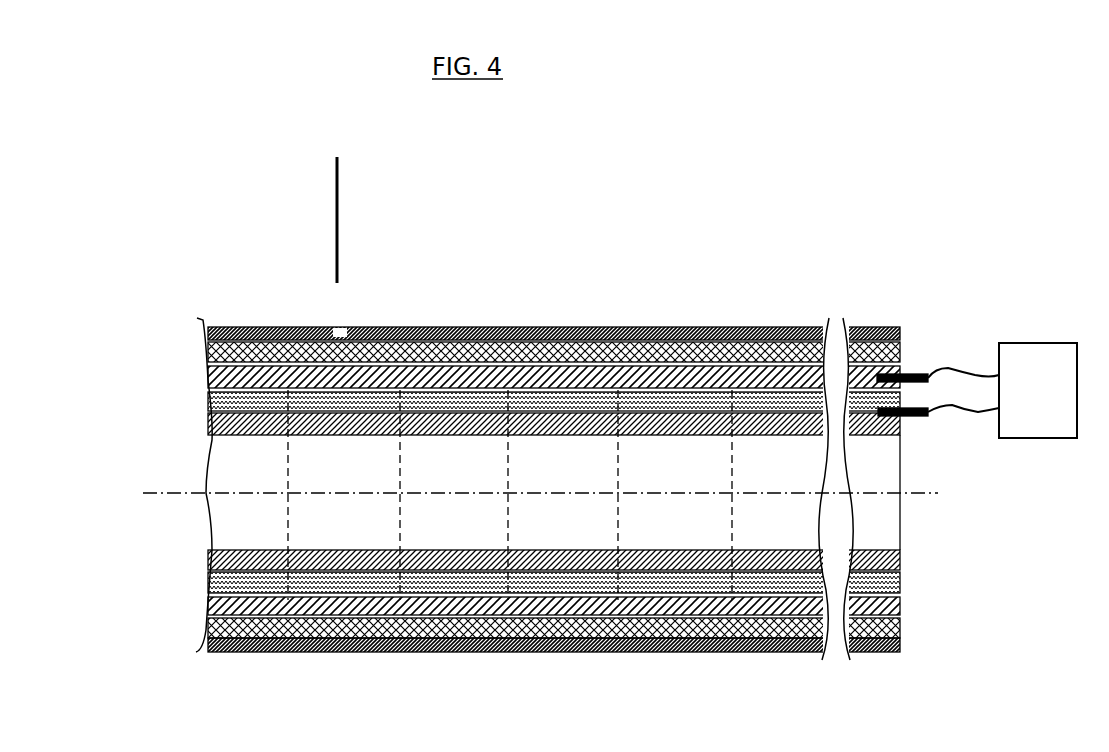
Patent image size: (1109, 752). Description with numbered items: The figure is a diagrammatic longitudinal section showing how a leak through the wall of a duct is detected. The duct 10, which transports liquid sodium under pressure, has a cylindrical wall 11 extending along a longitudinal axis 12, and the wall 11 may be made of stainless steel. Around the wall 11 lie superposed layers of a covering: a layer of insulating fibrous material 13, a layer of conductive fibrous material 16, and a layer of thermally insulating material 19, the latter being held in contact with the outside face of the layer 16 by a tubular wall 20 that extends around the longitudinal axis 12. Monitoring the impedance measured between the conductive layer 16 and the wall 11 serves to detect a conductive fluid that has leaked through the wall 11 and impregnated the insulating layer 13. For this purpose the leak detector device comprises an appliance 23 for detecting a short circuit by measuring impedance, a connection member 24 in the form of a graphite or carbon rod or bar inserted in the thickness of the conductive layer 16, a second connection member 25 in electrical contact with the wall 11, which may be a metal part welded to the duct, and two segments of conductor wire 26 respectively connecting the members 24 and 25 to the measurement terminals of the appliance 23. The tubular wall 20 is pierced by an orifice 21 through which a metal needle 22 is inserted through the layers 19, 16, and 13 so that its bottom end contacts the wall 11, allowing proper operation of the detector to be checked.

The duct 10 is at (542, 450).
The cylindrical wall 11 is at (207, 420).
The longitudinal axis 12 is at (178, 495).
The layer of insulating fibrous material 13 is at (207, 403).
The layer of conductive fibrous material 16 is at (207, 373).
The layer of thermally insulating material 19 is at (207, 350).
The tubular wall 20 is at (598, 325).
The orifice 21 is at (343, 325).
The metal needle 22 is at (340, 203).
The appliance 23 is at (1048, 400).
The connection member 24 is at (910, 372).
The second connection member 25 is at (925, 418).
The segments of conductor wire 26 is at (985, 410).